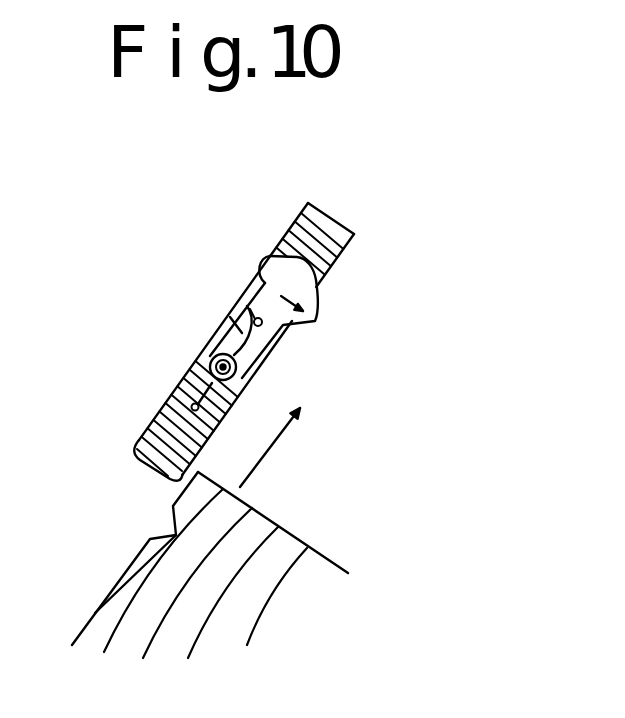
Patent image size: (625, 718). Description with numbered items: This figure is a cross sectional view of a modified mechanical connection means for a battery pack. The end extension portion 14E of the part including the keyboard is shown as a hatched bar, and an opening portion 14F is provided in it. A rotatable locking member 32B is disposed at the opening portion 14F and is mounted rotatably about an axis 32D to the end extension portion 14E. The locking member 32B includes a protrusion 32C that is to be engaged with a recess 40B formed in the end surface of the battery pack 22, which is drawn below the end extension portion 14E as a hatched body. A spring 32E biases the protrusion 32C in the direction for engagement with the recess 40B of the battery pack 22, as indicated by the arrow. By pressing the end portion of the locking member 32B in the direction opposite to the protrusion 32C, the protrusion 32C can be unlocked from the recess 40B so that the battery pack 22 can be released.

The end extension portion 14E is at (156, 421).
The opening portion 14F is at (263, 270).
The locking member 32B is at (231, 316).
The protrusion 32C is at (315, 321).
The axis 32D is at (218, 337).
The spring 32E is at (191, 372).
The recess 40B is at (164, 526).
The first battery pack 22 is at (275, 555).